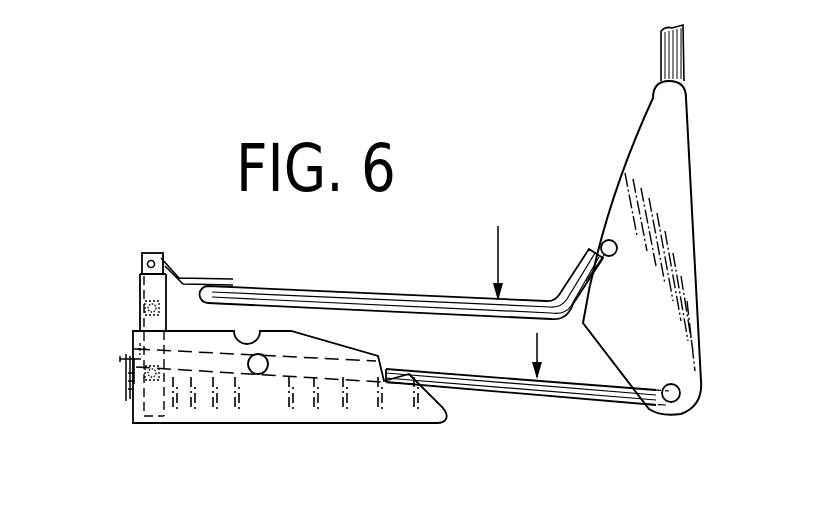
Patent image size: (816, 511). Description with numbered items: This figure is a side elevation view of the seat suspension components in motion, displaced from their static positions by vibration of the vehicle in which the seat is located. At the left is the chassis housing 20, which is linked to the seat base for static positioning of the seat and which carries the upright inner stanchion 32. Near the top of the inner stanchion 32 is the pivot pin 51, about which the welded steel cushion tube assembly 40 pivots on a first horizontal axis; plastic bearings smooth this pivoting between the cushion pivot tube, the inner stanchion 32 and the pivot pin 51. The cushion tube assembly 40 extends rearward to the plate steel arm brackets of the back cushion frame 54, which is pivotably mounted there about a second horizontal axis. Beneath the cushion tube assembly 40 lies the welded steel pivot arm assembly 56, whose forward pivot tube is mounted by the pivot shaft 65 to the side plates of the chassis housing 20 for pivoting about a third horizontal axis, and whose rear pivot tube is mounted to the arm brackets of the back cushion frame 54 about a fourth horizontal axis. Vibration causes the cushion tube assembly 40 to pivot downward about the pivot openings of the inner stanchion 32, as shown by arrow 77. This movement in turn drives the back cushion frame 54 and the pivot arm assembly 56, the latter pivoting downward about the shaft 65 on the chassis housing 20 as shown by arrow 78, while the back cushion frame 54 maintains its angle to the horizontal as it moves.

The chassis housing 20 is at (132, 412).
The inner stanchion 32 is at (140, 262).
The pivot pin 51 is at (165, 261).
The cushion tube assembly 40 is at (336, 289).
The arrow 77 is at (498, 262).
The arrow 78 is at (537, 357).
The back cushion frame 54 is at (700, 290).
The pivot arm assembly 56 is at (500, 392).
The pivot shaft 65 is at (259, 373).